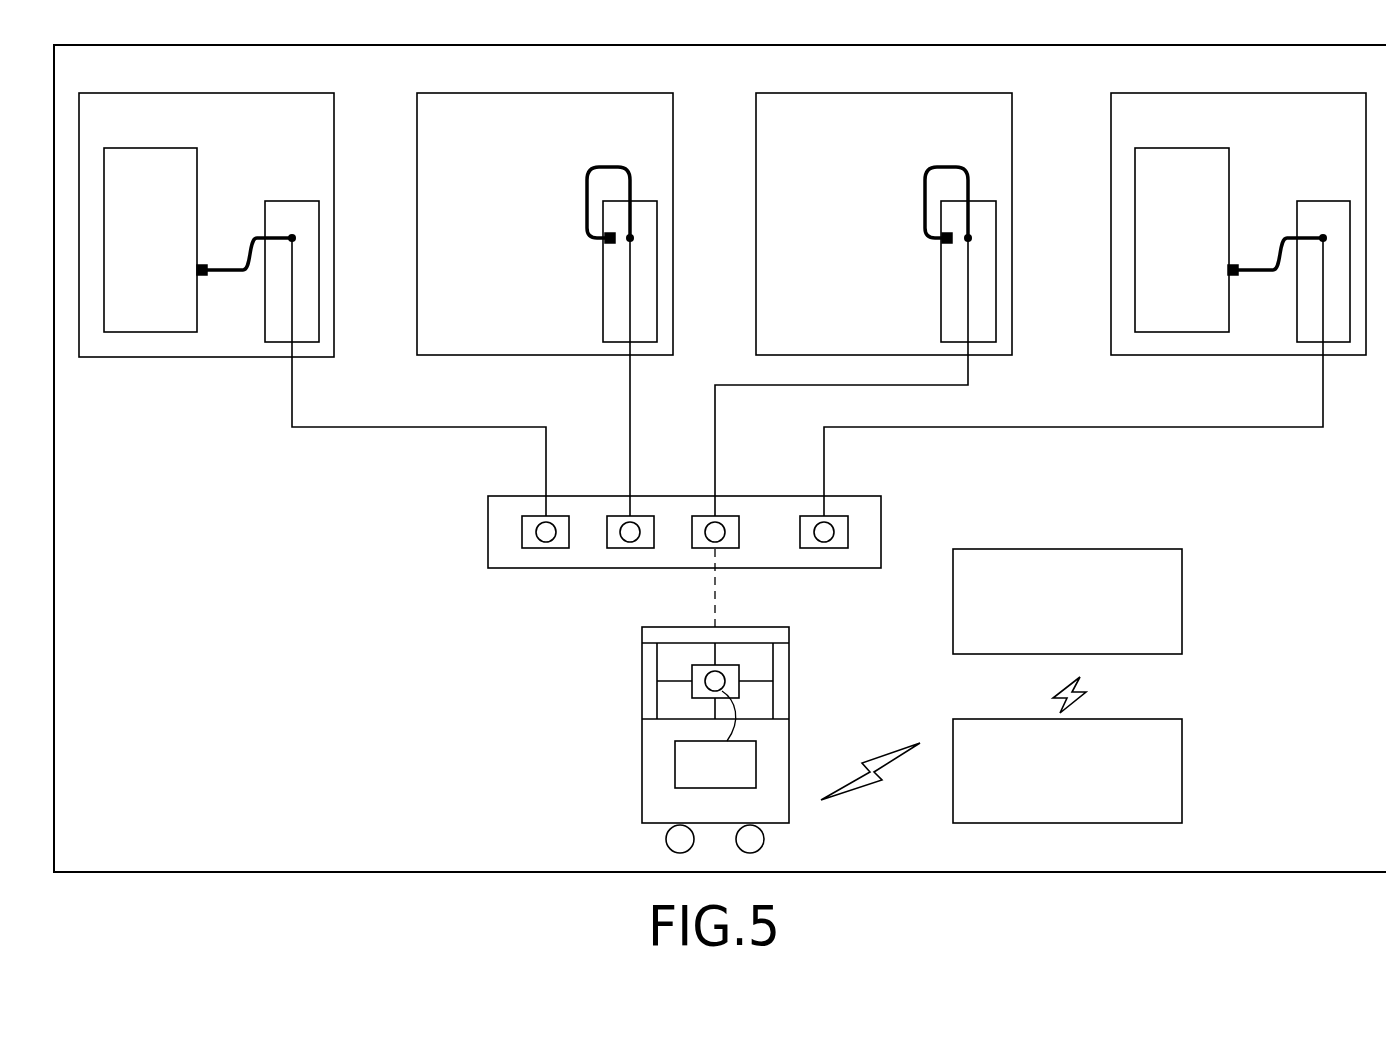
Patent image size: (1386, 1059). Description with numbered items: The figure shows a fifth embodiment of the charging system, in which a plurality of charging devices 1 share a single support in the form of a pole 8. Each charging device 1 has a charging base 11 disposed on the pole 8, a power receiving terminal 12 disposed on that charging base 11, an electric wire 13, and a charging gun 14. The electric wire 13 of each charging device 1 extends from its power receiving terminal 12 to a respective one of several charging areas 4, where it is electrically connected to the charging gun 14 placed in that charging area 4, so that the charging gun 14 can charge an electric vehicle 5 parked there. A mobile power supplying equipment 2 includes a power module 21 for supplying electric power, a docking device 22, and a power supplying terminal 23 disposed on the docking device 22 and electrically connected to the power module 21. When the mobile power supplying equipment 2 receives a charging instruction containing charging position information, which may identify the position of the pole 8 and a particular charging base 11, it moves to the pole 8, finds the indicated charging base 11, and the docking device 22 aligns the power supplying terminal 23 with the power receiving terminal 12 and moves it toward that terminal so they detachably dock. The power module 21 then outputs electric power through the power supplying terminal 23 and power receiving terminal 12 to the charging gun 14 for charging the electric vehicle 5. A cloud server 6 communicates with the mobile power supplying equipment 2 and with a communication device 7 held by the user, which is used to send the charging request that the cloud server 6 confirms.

The charging device 1 is at (685, 540).
The mobile power supplying equipment 2 is at (752, 701).
The charging area 4 is at (79, 130).
The electric vehicle 5 is at (197, 176).
The cloud server 6 is at (1170, 719).
The communication device 7 is at (1170, 549).
The pole 8 is at (866, 496).
The charging base 11 is at (641, 518).
The power receiving terminal 12 is at (620, 535).
The electric wire 13 is at (381, 428).
The charging gun 14 is at (205, 268).
The power module 21 is at (675, 763).
The docking device 22 is at (739, 670).
The power supplying terminal 23 is at (705, 685).